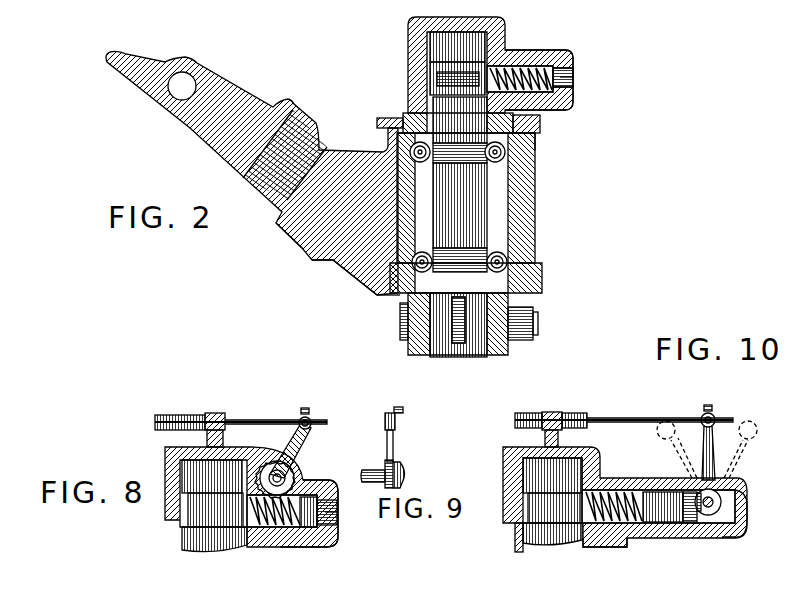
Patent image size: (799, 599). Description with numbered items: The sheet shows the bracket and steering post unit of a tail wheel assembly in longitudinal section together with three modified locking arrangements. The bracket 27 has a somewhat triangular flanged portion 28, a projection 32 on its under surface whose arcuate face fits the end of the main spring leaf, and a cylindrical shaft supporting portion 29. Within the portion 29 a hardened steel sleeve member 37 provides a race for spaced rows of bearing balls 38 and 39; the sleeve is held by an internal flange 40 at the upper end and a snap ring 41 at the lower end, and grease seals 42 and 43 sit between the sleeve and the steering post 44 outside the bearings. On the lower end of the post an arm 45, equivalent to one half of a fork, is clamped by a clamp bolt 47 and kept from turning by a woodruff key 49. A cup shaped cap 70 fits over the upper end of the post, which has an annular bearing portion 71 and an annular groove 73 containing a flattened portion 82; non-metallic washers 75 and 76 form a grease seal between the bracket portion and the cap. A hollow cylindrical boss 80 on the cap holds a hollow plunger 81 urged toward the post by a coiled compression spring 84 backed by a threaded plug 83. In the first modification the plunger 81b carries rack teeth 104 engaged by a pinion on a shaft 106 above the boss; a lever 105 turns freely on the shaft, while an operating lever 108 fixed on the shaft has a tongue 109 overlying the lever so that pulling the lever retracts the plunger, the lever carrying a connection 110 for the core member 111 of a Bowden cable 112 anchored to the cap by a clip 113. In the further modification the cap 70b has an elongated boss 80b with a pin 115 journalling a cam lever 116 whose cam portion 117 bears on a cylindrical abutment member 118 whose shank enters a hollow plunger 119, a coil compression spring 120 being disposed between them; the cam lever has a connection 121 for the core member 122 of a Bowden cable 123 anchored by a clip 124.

In FIG. 2, the bracket 27 is at (239, 105).
In FIG. 2, the triangular flanged portion 28 is at (316, 150).
In FIG. 2, the cylindrical shaft supporting portion 29 is at (540, 185).
In FIG. 2, the projection 32 is at (313, 262).
In FIG. 2, the sleeve member 37 is at (510, 217).
In FIG. 2, the bearing balls 38 is at (508, 152).
In FIG. 2, the bearing balls 39 is at (507, 262).
In FIG. 2, the internal flange 40 is at (537, 135).
In FIG. 2, the snap ring 41 is at (542, 288).
In FIG. 2, the grease seal 42 is at (378, 124).
In FIG. 2, the grease seal 43 is at (398, 296).
In FIG. 2, the steering post 44 is at (478, 358).
In FIG. 8, the steering post 44 is at (200, 543).
In FIG. 10, the steering post 44 is at (541, 533).
In FIG. 2, the arm 45 is at (415, 340).
In FIG. 2, the clamp bolt 47 is at (538, 322).
In FIG. 2, the woodruff key 49 is at (457, 340).
In FIG. 2, the cap 70 is at (418, 22).
In FIG. 8, the cap 70 is at (168, 455).
In FIG. 10, the cap 70b is at (513, 455).
In FIG. 2, the annular bearing portion 71 is at (437, 45).
In FIG. 2, the annular groove 73 is at (435, 66).
In FIG. 8, the annular groove 73 is at (178, 523).
In FIG. 10, the annular groove 73 is at (523, 525).
In FIG. 2, the non-metallic washer 75 is at (413, 112).
In FIG. 2, the non-metallic washer 76 is at (532, 118).
In FIG. 2, the hollow cylindrical boss 80 is at (517, 50).
In FIG. 8, the hollow cylindrical boss 80 is at (305, 480).
In FIG. 10, the boss 80b is at (633, 478).
In FIG. 2, the plunger 81 is at (538, 68).
In FIG. 8, the plunger 81b is at (272, 527).
In FIG. 2, the flattened portion 82 is at (437, 80).
In FIG. 2, the plug 83 is at (574, 75).
In FIG. 8, the plug 83 is at (332, 513).
In FIG. 2, the coiled compression spring 84 is at (560, 52).
In FIG. 8, the coiled compression spring 84 is at (315, 537).
In FIG. 8, the rack teeth 104 is at (232, 547).
In FIG. 8, the lever 105 is at (300, 438).
In FIG. 9, the lever 105 is at (394, 437).
In FIG. 8, the shaft 106 is at (290, 473).
In FIG. 9, the operating lever 108 is at (404, 468).
In FIG. 9, the tongue 109 is at (378, 462).
In FIG. 8, the connection 110 is at (305, 417).
In FIG. 9, the connection 110 is at (403, 413).
In FIG. 8, the core member 111 is at (267, 420).
In FIG. 8, the Bowden cable 112 is at (160, 417).
In FIG. 8, the clip 113 is at (217, 413).
In FIG. 10, the pin 115 is at (713, 510).
In FIG. 10, the cam lever 116 is at (715, 445).
In FIG. 10, the cam portion 117 is at (737, 492).
In FIG. 10, the cylindrical abutment member 118 is at (692, 543).
In FIG. 10, the hollow plunger 119 is at (600, 540).
In FIG. 10, the coil compression spring 120 is at (616, 522).
In FIG. 10, the connection 121 is at (713, 415).
In FIG. 10, the core member 122 is at (647, 418).
In FIG. 10, the Bowden cable 123 is at (580, 413).
In FIG. 10, the clip 124 is at (552, 415).